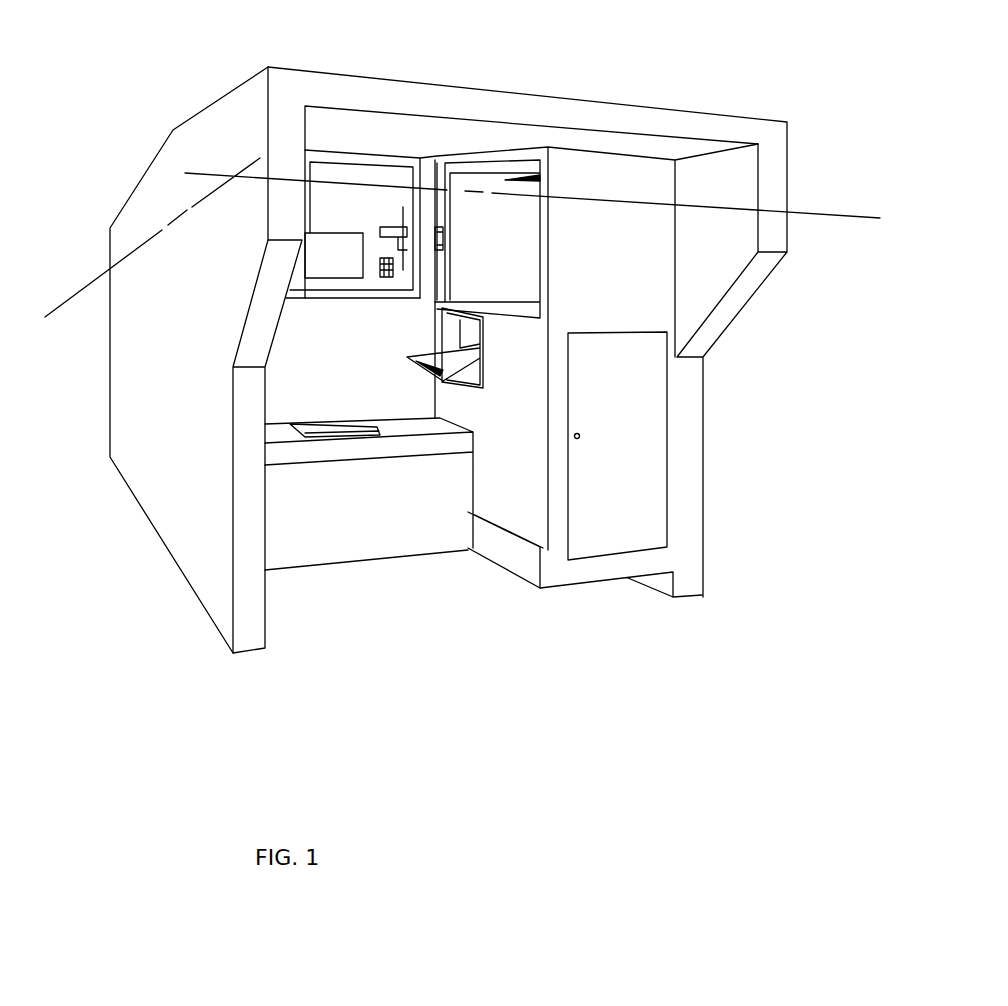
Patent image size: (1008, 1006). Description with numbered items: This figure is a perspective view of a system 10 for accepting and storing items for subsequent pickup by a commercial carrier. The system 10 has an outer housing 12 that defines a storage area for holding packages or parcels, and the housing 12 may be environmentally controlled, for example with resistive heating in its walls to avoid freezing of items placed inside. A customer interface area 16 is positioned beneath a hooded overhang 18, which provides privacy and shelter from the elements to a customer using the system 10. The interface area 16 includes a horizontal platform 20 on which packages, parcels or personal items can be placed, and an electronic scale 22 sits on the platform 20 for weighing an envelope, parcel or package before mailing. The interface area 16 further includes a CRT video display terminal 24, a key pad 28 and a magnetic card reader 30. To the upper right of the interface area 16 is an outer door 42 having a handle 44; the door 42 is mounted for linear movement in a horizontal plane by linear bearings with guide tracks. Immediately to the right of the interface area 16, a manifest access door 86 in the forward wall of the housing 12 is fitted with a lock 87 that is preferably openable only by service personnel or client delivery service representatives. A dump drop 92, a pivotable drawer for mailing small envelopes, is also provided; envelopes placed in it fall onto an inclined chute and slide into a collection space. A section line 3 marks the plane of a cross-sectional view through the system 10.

The section line 3- 3 is at (63, 292).
The system 10 is at (531, 86).
The outer housing 12 is at (138, 182).
The customer interface area 16 is at (453, 136).
The hooded overhang 18 is at (347, 113).
The horizontal platform 20 is at (423, 420).
The electronic scale 22 is at (333, 413).
The CRT video display terminal 24 is at (349, 270).
The key pad 28 is at (386, 280).
The magnetic card reader 30 is at (396, 217).
The outer door 42 is at (509, 224).
The handle 44 is at (446, 256).
The manifest access door 86 is at (630, 424).
The lock 87 is at (577, 440).
The dump drop 92 is at (420, 353).